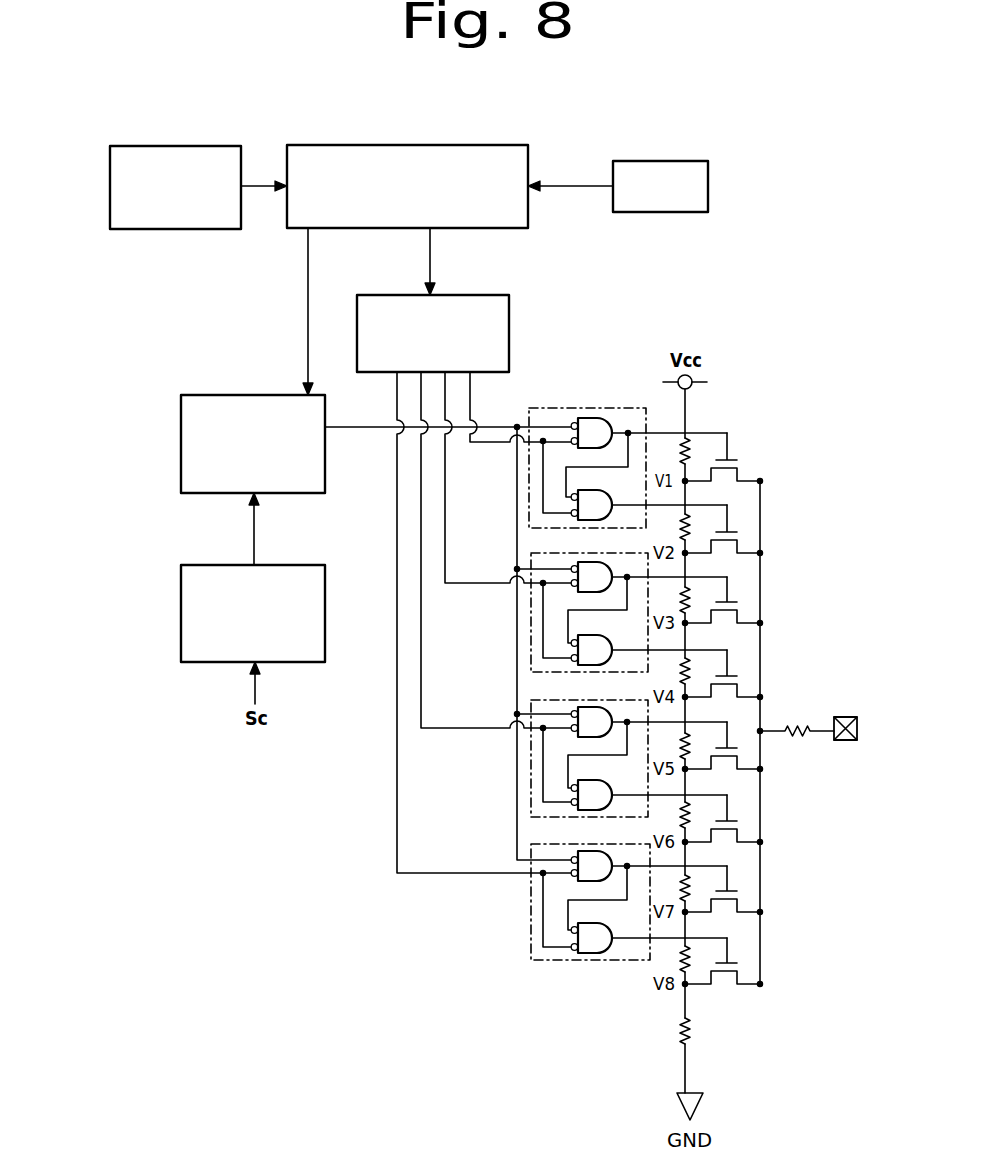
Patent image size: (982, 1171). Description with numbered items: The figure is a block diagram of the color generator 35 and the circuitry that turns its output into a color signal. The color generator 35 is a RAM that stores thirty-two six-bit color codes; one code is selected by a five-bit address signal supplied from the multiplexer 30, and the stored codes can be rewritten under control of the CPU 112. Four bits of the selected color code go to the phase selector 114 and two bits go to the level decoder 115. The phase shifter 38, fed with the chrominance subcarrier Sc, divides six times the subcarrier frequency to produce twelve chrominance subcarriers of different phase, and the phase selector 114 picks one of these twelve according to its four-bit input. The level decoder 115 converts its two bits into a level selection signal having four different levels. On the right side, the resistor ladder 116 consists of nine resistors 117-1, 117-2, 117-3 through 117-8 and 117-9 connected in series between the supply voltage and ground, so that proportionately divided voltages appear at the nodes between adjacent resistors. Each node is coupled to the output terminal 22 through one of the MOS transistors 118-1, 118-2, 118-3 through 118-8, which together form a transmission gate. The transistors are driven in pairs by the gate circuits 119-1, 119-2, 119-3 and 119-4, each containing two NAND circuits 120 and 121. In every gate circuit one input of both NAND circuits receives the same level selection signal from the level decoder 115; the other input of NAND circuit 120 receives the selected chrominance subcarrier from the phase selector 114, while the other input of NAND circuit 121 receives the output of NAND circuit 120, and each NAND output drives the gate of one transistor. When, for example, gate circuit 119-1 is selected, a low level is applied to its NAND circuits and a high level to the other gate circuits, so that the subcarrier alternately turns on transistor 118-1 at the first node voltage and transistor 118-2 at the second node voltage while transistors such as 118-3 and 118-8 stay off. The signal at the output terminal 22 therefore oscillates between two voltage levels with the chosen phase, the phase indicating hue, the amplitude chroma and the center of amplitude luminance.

The multiplexer 30 is at (218, 146).
The color generator 35 is at (487, 145).
The CPU 112 is at (697, 161).
The level decoder 115 is at (493, 295).
The phase selector 114 is at (193, 395).
The phase shifter 38 is at (196, 565).
The gate circuit 119-1 is at (626, 442).
The gate circuit 119-2 is at (543, 553).
The gate circuit 119-3 is at (543, 700).
The gate circuit 119-4 is at (543, 844).
The NAND circuit 120 is at (597, 418).
The NAND circuit 121 is at (590, 490).
The resistor ladder 116 is at (687, 415).
The resistor 117-1 is at (697, 456).
The resistor 117-2 is at (697, 525).
The resistor 117-3 is at (697, 594).
The resistor 117-8 is at (677, 960).
The resistor 117-9 is at (680, 1036).
The MOS transistor 118-1 is at (740, 463).
The MOS transistor 118-2 is at (740, 533).
The MOS transistor 118-3 is at (740, 606).
The MOS transistor 118-8 is at (745, 968).
The output terminal 22 is at (843, 717).